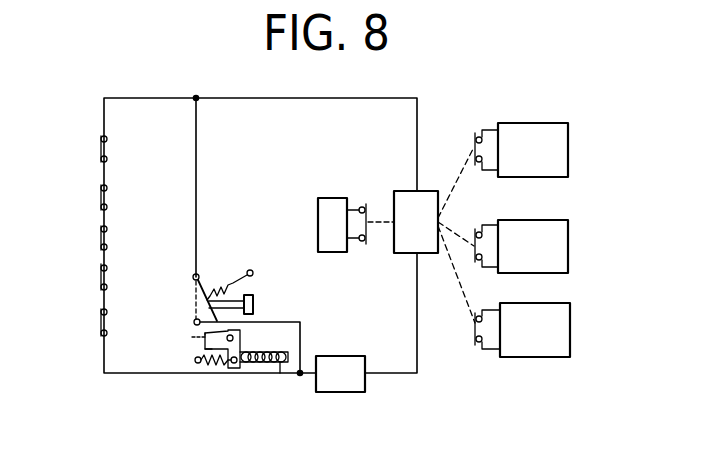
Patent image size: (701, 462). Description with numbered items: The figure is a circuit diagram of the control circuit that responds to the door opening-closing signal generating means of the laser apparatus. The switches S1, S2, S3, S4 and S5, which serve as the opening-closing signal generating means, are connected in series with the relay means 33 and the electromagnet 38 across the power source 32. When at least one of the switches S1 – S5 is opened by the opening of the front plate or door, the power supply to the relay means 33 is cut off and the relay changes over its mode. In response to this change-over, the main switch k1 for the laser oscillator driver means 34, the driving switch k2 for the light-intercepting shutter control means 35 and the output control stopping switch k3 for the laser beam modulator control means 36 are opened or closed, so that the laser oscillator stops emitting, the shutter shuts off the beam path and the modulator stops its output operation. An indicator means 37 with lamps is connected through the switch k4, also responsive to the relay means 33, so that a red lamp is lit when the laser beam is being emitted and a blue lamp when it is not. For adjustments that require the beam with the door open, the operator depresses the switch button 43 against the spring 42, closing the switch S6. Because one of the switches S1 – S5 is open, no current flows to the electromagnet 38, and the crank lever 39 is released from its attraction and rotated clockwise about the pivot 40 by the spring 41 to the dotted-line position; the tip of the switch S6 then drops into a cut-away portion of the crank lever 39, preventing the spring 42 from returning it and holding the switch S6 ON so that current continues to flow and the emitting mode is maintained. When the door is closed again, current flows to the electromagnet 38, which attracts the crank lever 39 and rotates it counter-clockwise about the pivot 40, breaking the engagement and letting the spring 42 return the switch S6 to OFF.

The switch S1 is at (101, 148).
The switch S2 is at (101, 197).
The switch S3 is at (72, 237).
The switch S4 is at (101, 275).
The switch S5 is at (101, 319).
The switch S6 is at (200, 308).
The power source 32 is at (338, 393).
The relay means 33 is at (404, 191).
The laser oscillator driver means 34 is at (568, 150).
The light-intercepting shutter control means 35 is at (568, 247).
The laser beam modulator control means 36 is at (570, 330).
The indicator means 37 is at (332, 198).
The electromagnet 38 is at (261, 373).
The crank lever 39 is at (197, 356).
The pivot 40 is at (234, 338).
The spring 41 is at (217, 373).
The spring 42 is at (221, 285).
The switch button 43 is at (254, 303).
The main switch k1 is at (475, 143).
The driving switch k2 is at (474, 233).
The output control stopping switch k3 is at (475, 329).
The switch k4 is at (365, 240).